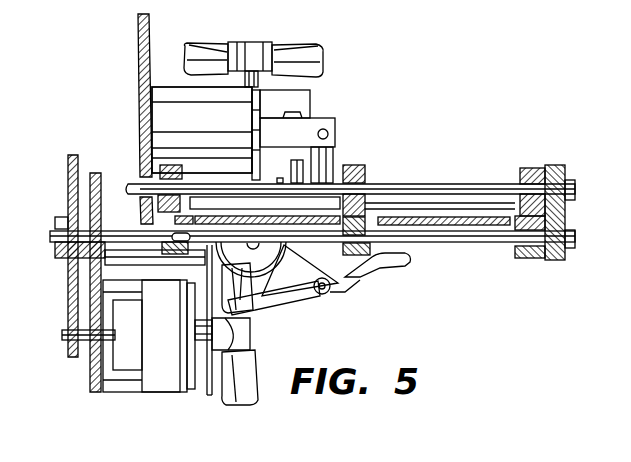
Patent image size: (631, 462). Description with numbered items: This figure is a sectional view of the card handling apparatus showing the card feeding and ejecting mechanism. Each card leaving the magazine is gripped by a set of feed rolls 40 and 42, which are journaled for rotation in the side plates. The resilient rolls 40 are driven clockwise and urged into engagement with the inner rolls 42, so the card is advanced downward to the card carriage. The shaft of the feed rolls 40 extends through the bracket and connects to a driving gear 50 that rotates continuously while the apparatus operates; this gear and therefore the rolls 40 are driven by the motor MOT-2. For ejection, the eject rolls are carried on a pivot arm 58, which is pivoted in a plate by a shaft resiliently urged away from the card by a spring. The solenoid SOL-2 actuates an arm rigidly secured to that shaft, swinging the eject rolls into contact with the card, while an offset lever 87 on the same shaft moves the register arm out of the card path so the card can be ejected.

The inner feed rolls 42 is at (357, 165).
The resilient feed rolls 40 is at (372, 270).
The driving gear 50 is at (68, 170).
The pivot arm 58 is at (285, 308).
The offset lever 87 is at (352, 293).
The solenoid SOL-2 is at (176, 265).
The motor MOT-2 is at (183, 393).